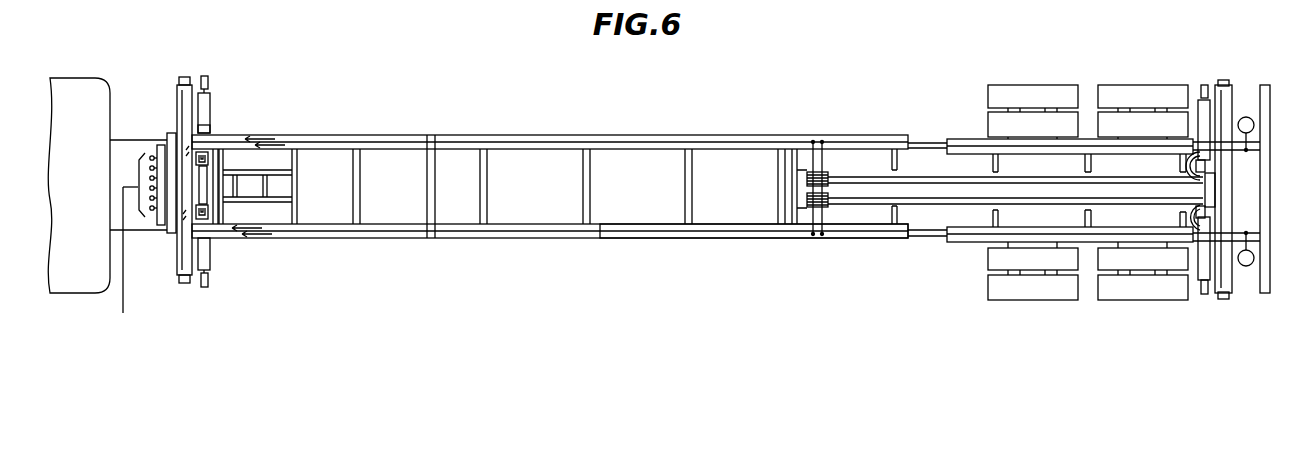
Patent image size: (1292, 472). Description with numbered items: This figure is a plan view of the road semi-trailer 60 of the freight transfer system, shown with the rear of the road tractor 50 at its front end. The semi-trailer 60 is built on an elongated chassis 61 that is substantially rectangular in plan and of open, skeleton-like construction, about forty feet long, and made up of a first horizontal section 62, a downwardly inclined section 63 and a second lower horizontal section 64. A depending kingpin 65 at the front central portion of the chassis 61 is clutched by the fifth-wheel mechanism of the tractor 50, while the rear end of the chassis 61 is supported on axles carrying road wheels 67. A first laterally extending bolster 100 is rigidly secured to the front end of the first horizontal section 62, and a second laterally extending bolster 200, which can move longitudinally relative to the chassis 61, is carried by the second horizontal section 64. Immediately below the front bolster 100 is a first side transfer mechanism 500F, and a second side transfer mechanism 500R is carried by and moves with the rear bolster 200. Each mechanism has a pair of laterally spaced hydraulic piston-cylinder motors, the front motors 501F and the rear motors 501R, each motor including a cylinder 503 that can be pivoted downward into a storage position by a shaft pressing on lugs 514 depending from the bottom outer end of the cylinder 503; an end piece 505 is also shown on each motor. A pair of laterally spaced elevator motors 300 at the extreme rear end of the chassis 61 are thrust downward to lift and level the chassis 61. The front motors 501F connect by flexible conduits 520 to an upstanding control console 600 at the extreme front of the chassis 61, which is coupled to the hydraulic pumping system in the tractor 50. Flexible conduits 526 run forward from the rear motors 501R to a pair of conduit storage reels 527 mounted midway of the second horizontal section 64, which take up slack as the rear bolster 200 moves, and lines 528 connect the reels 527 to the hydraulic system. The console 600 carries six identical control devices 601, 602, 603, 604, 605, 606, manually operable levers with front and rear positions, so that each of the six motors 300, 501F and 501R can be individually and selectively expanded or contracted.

The road tractor 50 is at (69, 74).
The first laterally extending bolster 100 is at (176, 103).
The flexible conduits 520 is at (184, 228).
The control console 600 is at (135, 272).
The control device 601 is at (131, 247).
The control device 602 is at (131, 261).
The control device 603 is at (131, 276).
The control device 604 is at (131, 290).
The control device 605 is at (131, 304).
The control device 606 is at (131, 319).
The end cap 505 is at (205, 75).
The front motors 501F is at (213, 108).
The cylinder 503 is at (211, 128).
The first side transfer mechanism 500F is at (214, 282).
The road semi-trailer 60 is at (550, 182).
The chassis 61 is at (636, 134).
The first horizontal section 62 is at (354, 240).
The downwardly inclined section 63 is at (434, 240).
The second lower horizontal section 64 is at (708, 240).
The kingpin 65 is at (248, 195).
The conduit storage reels 527 is at (829, 173).
The lines 528 is at (927, 137).
The flexible conduits 526 is at (1042, 180).
The road wheels 67 is at (1028, 93).
The lugs 514 is at (1204, 190).
The second laterally extending bolster 200 is at (1219, 78).
The elevator motors 300 is at (1247, 116).
The rear motors 501R is at (1203, 304).
The second side transfer mechanism 500R is at (1192, 308).